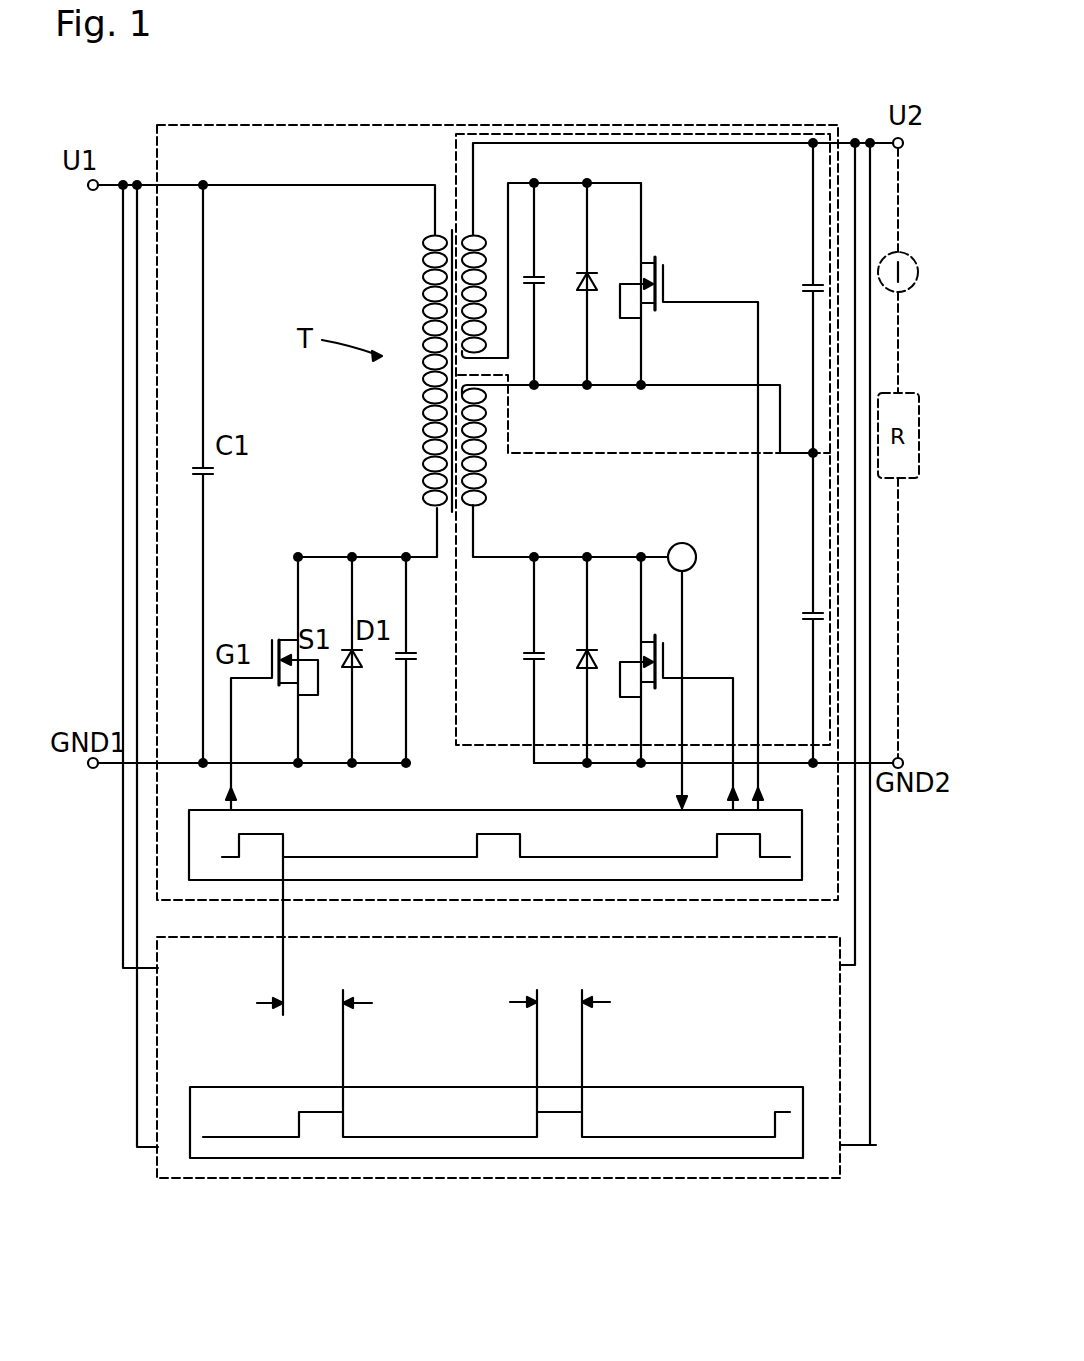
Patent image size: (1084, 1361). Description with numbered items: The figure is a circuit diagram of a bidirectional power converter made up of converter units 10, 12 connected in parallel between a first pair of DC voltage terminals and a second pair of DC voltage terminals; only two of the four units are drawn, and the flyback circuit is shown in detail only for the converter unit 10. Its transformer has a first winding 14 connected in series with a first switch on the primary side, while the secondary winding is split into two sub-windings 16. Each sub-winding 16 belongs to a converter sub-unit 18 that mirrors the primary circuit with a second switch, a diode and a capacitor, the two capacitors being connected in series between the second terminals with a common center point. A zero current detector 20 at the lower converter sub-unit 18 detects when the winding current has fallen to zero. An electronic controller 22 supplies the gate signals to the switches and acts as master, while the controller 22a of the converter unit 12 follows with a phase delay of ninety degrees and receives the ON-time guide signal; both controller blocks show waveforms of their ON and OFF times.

The converter unit 10 is at (326, 125).
The converter unit 12 is at (345, 1178).
The first winding 14 is at (425, 390).
The sub-winding 16 is at (478, 242).
The converter sub-unit 18 is at (797, 198).
The zero current detector 20 is at (680, 555).
The electronic controller 22 is at (463, 810).
The controller 22a is at (460, 1087).